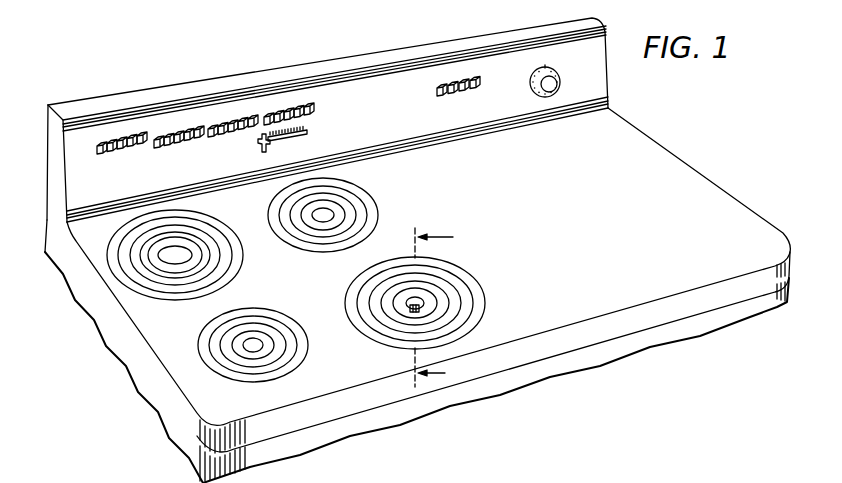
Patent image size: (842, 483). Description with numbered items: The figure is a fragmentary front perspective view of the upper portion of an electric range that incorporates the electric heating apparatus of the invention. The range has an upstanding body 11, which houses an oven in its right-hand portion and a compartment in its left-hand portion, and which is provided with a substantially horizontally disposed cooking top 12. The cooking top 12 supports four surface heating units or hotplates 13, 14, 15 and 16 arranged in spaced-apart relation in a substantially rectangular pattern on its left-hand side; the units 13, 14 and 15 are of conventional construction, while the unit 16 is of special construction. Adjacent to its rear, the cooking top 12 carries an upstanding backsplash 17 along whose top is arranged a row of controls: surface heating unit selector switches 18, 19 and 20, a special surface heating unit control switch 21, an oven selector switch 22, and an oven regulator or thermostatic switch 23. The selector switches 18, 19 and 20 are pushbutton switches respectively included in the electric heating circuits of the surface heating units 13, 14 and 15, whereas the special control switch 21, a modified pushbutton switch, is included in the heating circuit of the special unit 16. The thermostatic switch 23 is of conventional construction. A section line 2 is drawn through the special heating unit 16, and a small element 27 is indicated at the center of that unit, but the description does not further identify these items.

The upstanding body 11 is at (158, 407).
The cooking top 12 is at (711, 188).
The surface heating unit 13 is at (295, 367).
The surface heating unit 14 is at (212, 273).
The surface heating unit 15 is at (363, 210).
The surface heating unit 16 is at (473, 290).
The backsplash 17 is at (362, 62).
The surface heating unit selector switch 18 is at (115, 137).
The surface heating unit selector switch 19 is at (170, 125).
The surface heating unit selector switch 20 is at (220, 115).
The special surface heating unit control switch 21 is at (280, 105).
The oven selector switch 22 is at (455, 72).
The oven regulator or thermostatic switch 23 is at (543, 81).
The temperature sensing element 27 is at (408, 304).
The section line 2- 2 is at (440, 307).